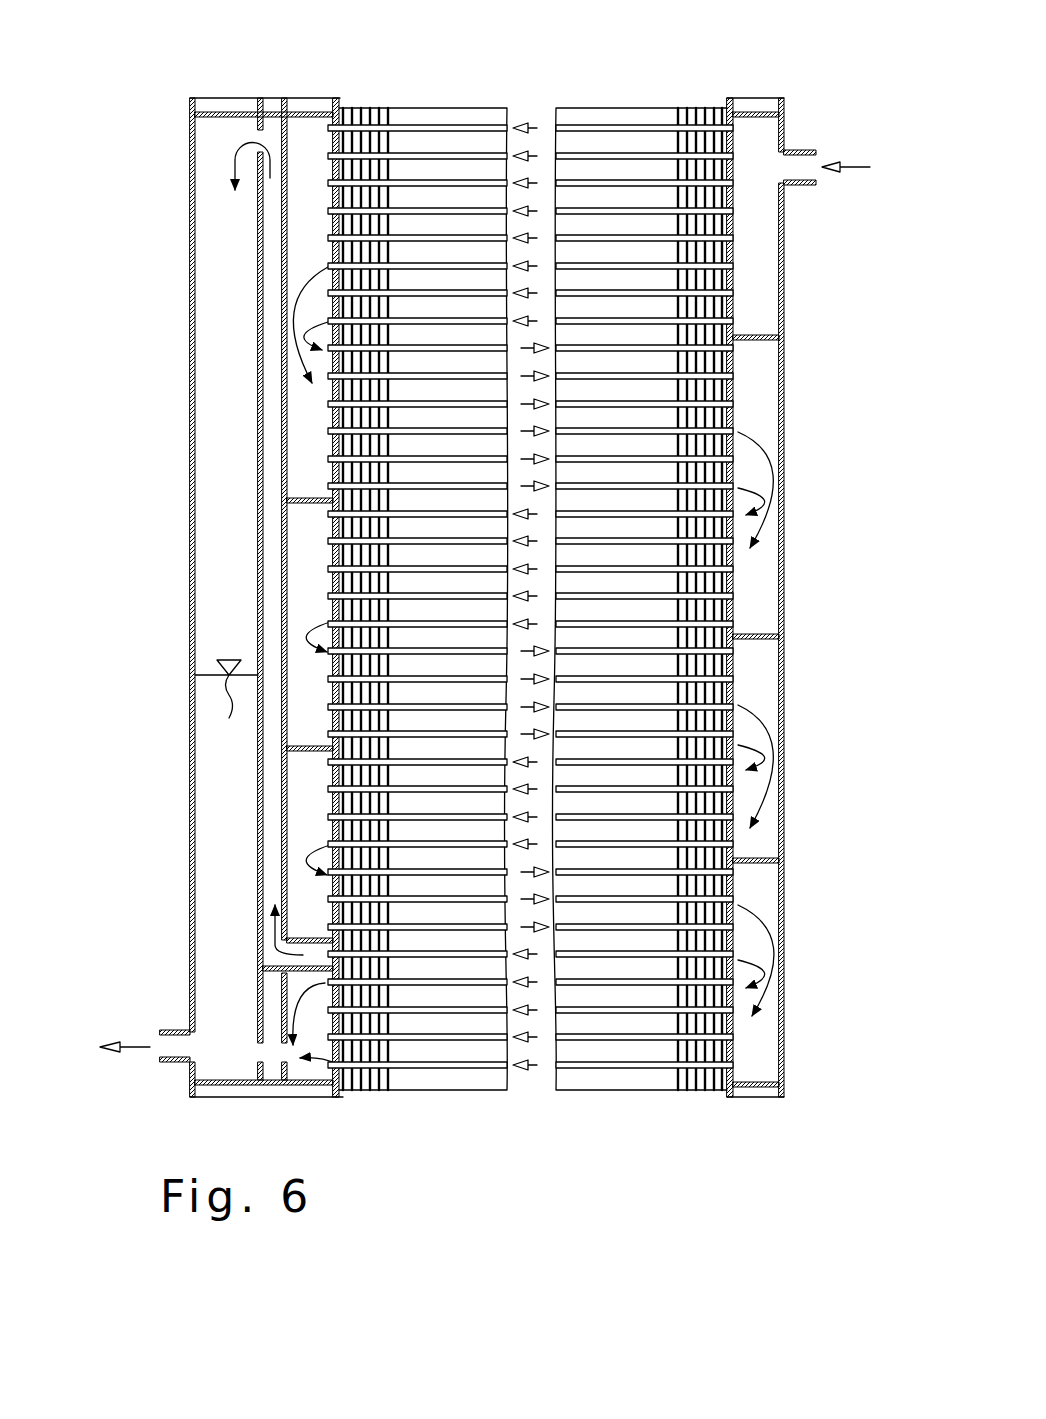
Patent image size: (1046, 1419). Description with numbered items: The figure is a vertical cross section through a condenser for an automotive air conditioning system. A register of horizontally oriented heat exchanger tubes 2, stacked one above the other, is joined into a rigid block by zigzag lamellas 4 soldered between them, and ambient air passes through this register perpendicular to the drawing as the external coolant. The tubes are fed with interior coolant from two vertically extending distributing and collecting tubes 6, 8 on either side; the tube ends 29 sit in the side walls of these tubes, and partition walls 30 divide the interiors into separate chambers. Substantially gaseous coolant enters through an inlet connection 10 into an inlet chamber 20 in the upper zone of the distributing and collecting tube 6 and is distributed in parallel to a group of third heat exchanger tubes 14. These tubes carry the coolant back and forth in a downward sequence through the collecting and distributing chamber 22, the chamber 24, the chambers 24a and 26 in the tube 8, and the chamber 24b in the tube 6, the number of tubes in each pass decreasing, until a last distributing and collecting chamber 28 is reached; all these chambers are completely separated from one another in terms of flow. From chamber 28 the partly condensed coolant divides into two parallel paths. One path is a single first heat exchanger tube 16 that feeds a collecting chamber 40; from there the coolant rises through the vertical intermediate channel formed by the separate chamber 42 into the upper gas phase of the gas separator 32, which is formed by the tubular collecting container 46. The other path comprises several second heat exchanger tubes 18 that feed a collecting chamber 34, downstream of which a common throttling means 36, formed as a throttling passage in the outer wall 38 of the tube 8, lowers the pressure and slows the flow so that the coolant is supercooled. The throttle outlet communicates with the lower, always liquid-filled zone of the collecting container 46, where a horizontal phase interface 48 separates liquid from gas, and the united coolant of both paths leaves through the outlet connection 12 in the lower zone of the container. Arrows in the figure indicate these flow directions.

The heat exchanger tubes 2 is at (570, 148).
The zigzag lamellas 4 is at (370, 118).
The distributing and collecting tube 6 is at (752, 82).
The distributing and collecting tube 8 is at (222, 82).
The inlet connection 10 is at (800, 152).
The outlet connection 12 is at (178, 1058).
The third heat exchanger tubes 14 is at (622, 190).
The first heat exchanger tube 16 is at (443, 955).
The second heat exchanger tubes 18 is at (652, 1063).
The inlet chamber 20 is at (740, 231).
The collecting and distributing chamber 22 is at (293, 231).
The collecting and distributing chamber 24 is at (742, 399).
The collecting and distributing chamber 24a is at (308, 575).
The collecting and distributing chamber 24b is at (760, 690).
The collecting and distributing chamber 26 is at (310, 810).
The last distributing and collecting chamber 28 is at (742, 1059).
The tube end in tube plate 29 is at (333, 198).
The partition baffle 30 is at (297, 497).
The gas separator 32 is at (228, 262).
The collecting chamber 34 is at (300, 1034).
The throttling means 36 is at (287, 1059).
The outer wall 38 is at (262, 1020).
The collecting chamber 40 is at (322, 945).
The chamber 42 is at (275, 398).
The collecting container 46 is at (207, 333).
The phase interface 48 is at (205, 665).